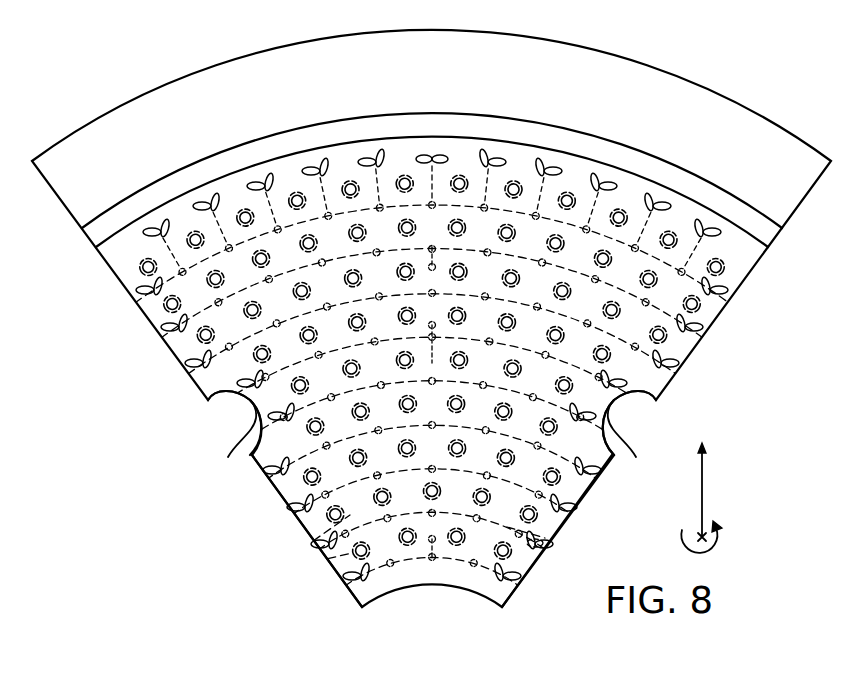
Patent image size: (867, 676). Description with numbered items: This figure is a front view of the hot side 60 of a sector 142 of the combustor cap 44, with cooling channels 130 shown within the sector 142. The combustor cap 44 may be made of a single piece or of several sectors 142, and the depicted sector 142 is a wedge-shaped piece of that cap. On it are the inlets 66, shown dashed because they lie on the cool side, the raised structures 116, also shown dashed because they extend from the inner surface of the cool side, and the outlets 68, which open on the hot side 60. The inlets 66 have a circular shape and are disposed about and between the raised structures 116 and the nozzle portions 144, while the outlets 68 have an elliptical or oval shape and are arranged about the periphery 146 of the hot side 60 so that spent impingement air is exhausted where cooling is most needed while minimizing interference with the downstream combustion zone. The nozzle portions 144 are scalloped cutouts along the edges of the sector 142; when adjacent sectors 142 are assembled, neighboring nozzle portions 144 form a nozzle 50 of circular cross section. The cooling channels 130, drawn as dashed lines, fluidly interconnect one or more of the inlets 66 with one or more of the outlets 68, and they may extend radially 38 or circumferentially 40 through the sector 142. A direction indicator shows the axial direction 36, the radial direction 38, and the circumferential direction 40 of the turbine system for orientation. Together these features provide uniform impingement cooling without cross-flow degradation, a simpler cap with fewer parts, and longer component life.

The combustor cap 44 is at (696, 83).
The sector 142 is at (729, 97).
The inlets 66 is at (378, 205).
The raised structures 116 is at (507, 177).
The outlets 68 is at (210, 157).
The cooling channels 130 is at (712, 318).
The nozzle portions 144 is at (235, 400).
The nozzle 50 is at (638, 443).
The periphery 146 is at (267, 477).
The hot side 60 is at (595, 479).
The radial direction 38 is at (703, 493).
The axial direction 36 is at (697, 537).
The circumferential direction 40 is at (722, 553).